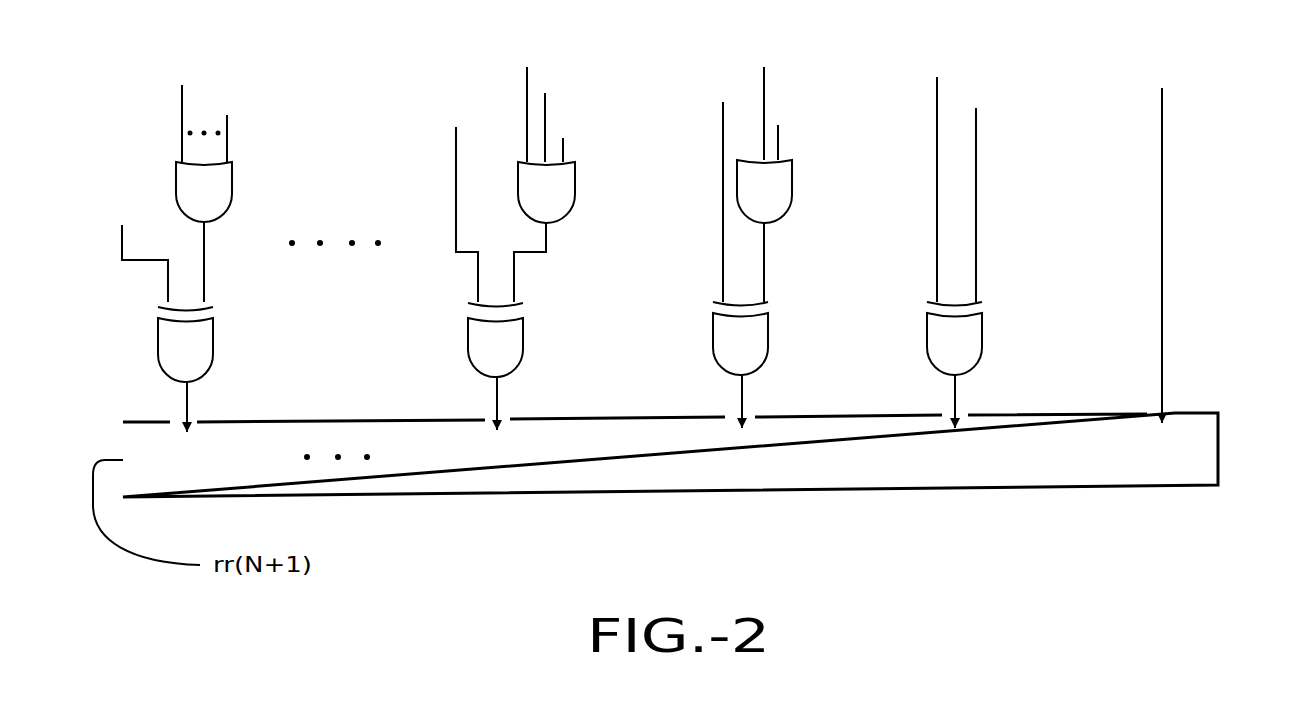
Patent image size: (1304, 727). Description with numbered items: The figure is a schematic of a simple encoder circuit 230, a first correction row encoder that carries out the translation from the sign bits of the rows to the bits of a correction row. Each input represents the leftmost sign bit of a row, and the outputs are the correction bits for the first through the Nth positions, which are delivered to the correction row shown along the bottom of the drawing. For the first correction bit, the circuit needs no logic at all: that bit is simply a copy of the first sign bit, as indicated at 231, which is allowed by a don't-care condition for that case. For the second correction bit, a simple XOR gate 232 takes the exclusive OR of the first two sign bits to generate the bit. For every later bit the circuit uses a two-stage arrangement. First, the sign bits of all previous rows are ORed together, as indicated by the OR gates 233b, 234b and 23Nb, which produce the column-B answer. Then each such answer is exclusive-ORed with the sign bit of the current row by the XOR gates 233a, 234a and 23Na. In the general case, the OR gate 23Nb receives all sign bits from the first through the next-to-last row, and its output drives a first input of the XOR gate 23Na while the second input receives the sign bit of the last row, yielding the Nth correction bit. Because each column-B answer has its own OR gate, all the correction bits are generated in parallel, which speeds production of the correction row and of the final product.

The encoder circuit 230 is at (381, 49).
The OR gate 23Nb is at (228, 200).
The XOR gate 23Na is at (214, 360).
The OR gate 234b is at (576, 182).
The XOR gate 234a is at (524, 352).
The OR gate 233b is at (793, 178).
The XOR gate 233a is at (769, 345).
The XOR gate 232 is at (983, 345).
The copy of Sr1 231 is at (1163, 363).